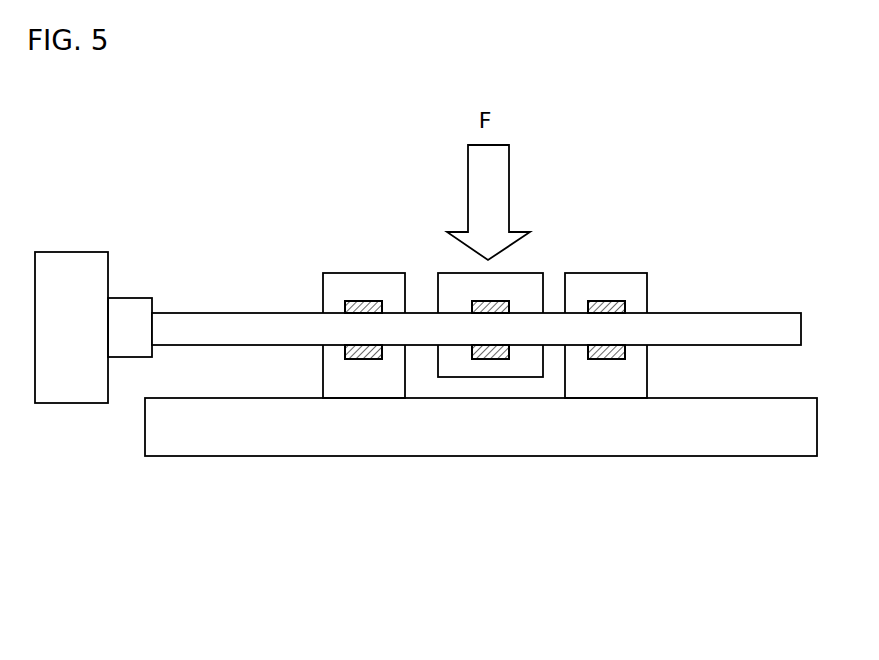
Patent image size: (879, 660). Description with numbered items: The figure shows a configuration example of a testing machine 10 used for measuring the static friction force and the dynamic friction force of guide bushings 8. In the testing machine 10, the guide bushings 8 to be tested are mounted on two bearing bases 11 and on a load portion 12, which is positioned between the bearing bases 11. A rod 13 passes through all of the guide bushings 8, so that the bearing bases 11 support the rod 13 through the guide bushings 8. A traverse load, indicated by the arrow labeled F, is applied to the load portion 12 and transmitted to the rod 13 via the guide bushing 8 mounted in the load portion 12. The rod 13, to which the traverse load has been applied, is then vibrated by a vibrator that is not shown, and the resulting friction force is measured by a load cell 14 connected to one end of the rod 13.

The guide bushing 8 is at (365, 358).
The testing machine 10 is at (271, 480).
The bearing base 11 is at (362, 282).
The load portion 12 is at (450, 275).
The rod 13 is at (695, 322).
The load cell 14 is at (80, 272).